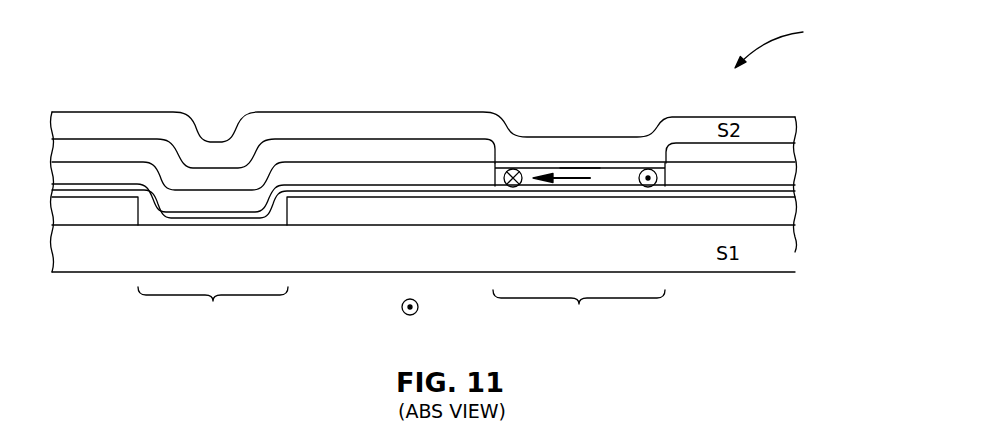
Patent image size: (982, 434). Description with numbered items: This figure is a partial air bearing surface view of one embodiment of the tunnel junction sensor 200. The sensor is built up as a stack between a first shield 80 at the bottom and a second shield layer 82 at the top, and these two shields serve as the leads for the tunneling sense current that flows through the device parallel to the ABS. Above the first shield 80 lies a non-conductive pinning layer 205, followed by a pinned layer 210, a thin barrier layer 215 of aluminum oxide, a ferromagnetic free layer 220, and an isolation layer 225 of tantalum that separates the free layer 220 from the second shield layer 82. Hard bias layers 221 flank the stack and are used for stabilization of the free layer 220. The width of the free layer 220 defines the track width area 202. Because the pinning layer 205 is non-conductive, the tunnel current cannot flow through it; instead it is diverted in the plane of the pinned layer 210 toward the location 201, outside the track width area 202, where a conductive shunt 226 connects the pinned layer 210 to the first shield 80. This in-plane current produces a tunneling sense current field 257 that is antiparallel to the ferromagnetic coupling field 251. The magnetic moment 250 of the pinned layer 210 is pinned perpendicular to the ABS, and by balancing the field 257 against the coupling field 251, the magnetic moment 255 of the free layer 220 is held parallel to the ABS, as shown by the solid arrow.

The tunnel junction sensor 200 is at (792, 43).
The electrical connection location 201 is at (213, 309).
The track width area 202 is at (579, 312).
The non-conductive pinning layer 205 is at (326, 213).
The pinned layer 210 is at (778, 199).
The barrier layer 215 is at (790, 190).
The free layer 220 is at (615, 176).
The hard bias layers 221 is at (315, 175).
The isolation layer 225 is at (578, 165).
The conductive shunt 226 is at (205, 108).
The magnetic moment of the pinned layer 250 is at (407, 193).
The ferromagnetic coupling field 251 is at (652, 168).
The magnetic moment of the free layer 255 is at (577, 180).
The tunneling sense current field 257 is at (511, 168).
The first shield 80 is at (787, 253).
The second shield layer 82 is at (551, 143).